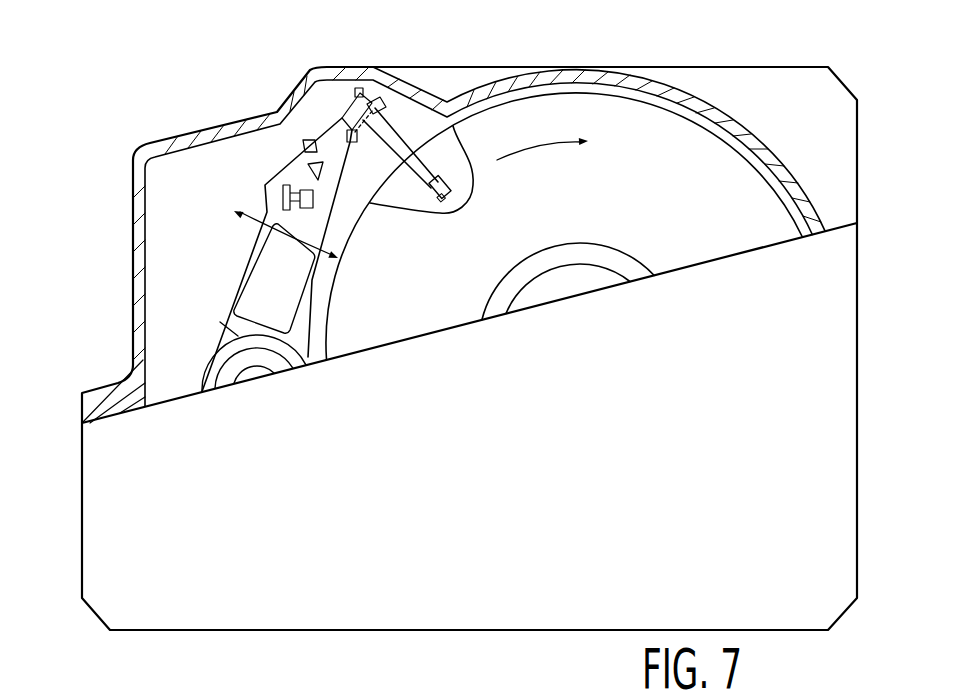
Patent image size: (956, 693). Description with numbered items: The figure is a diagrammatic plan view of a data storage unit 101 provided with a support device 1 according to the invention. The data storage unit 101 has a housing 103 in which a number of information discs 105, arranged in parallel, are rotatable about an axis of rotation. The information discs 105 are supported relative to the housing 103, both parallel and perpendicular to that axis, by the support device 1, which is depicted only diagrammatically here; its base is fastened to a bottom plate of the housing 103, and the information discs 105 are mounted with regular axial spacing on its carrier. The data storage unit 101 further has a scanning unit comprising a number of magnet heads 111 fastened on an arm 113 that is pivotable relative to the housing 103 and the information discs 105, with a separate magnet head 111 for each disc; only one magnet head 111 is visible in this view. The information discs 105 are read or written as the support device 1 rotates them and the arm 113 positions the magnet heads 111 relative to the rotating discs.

The support device 1 is at (528, 256).
The data storage unit 101 is at (772, 58).
The housing 103 is at (98, 438).
The information disc 105 is at (553, 110).
The magnet head 111 is at (430, 198).
The arm 113 is at (258, 252).